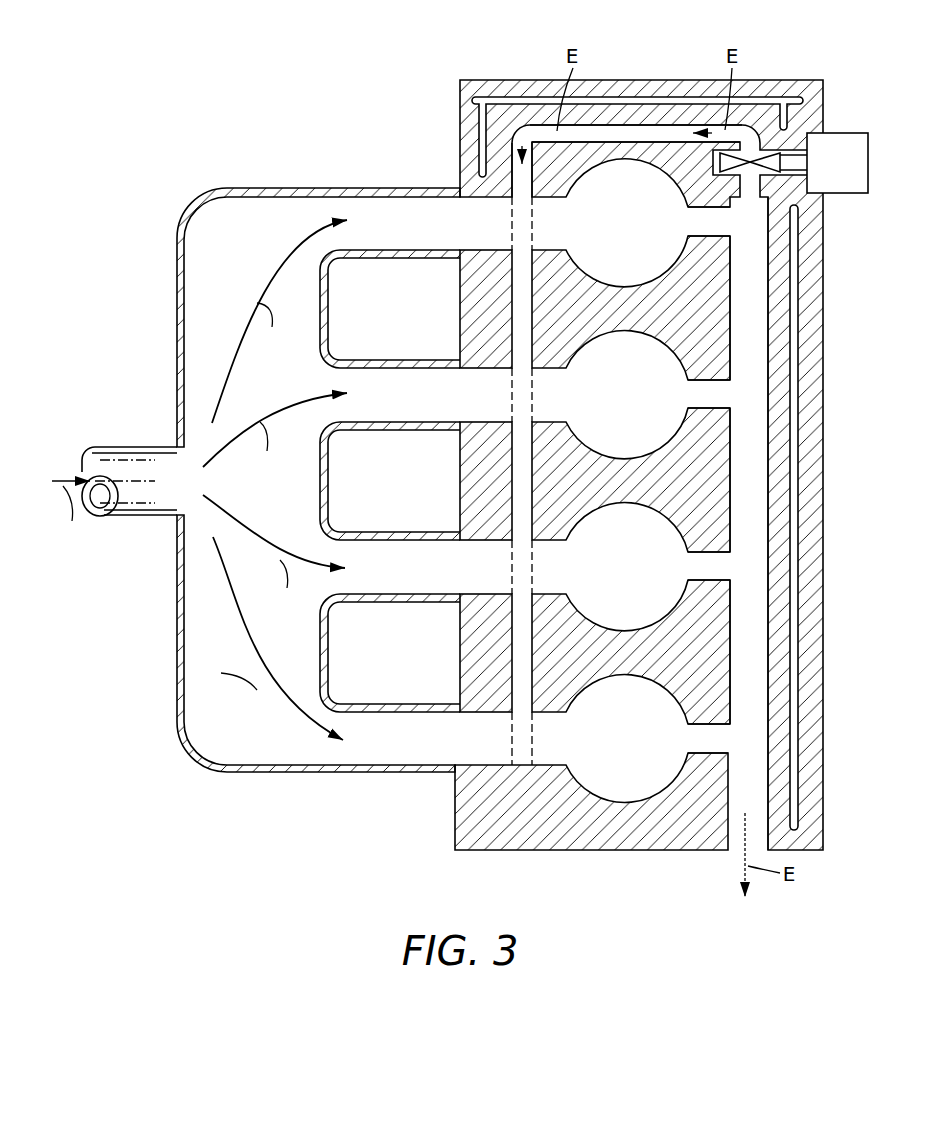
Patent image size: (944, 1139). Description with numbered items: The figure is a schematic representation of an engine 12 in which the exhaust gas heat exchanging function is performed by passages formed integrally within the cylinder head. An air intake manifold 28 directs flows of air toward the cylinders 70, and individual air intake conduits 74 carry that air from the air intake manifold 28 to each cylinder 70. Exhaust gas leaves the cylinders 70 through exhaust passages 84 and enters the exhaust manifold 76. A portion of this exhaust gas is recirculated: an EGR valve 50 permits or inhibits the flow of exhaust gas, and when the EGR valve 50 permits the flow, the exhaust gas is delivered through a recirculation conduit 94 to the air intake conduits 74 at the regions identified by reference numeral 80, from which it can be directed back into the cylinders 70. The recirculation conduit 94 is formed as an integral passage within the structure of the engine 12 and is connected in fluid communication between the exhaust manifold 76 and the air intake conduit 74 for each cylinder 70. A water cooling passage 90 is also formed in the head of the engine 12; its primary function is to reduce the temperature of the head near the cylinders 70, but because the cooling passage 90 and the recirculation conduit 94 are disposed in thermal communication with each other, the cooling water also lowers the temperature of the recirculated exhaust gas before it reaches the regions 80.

The engine 12 is at (690, 80).
The air intake manifold 28 is at (277, 757).
The EGR valve 50 is at (847, 194).
The cylinder 70 is at (611, 231).
The air intake conduit 74 is at (383, 240).
The exhaust manifold 76 is at (735, 494).
The regions where exhaust gas is delivered to the air intake conduits 80 is at (517, 221).
The exhaust passage 84 is at (722, 222).
The water cooling passage 90 is at (529, 96).
The recirculation conduit 94 is at (607, 132).